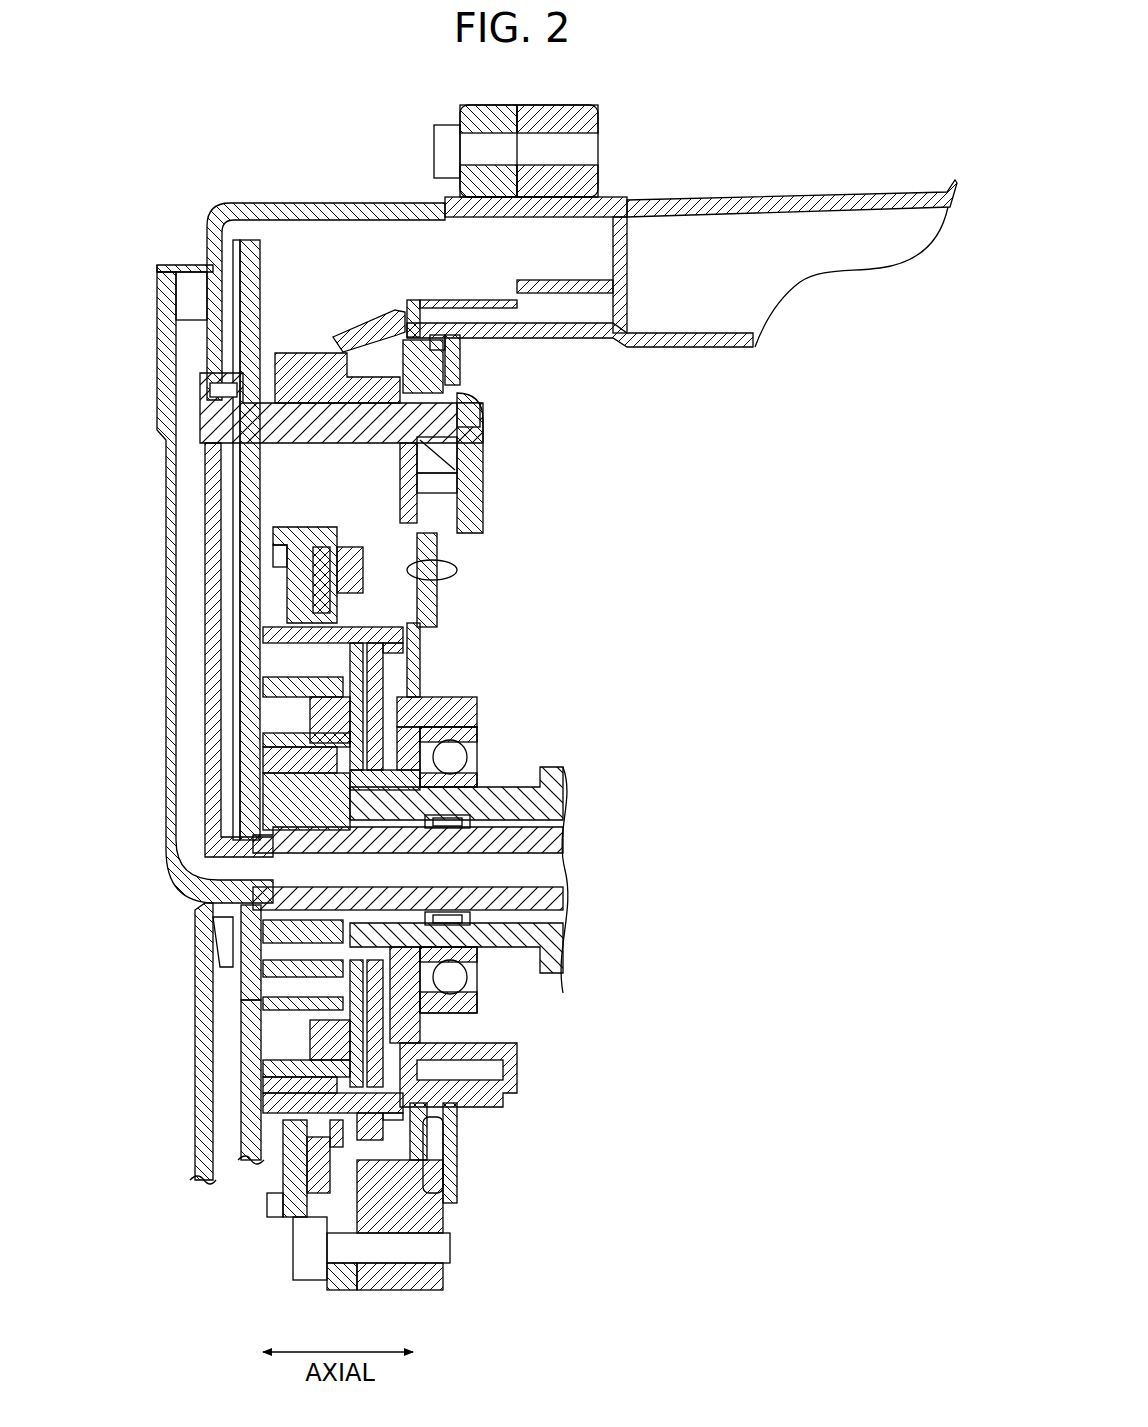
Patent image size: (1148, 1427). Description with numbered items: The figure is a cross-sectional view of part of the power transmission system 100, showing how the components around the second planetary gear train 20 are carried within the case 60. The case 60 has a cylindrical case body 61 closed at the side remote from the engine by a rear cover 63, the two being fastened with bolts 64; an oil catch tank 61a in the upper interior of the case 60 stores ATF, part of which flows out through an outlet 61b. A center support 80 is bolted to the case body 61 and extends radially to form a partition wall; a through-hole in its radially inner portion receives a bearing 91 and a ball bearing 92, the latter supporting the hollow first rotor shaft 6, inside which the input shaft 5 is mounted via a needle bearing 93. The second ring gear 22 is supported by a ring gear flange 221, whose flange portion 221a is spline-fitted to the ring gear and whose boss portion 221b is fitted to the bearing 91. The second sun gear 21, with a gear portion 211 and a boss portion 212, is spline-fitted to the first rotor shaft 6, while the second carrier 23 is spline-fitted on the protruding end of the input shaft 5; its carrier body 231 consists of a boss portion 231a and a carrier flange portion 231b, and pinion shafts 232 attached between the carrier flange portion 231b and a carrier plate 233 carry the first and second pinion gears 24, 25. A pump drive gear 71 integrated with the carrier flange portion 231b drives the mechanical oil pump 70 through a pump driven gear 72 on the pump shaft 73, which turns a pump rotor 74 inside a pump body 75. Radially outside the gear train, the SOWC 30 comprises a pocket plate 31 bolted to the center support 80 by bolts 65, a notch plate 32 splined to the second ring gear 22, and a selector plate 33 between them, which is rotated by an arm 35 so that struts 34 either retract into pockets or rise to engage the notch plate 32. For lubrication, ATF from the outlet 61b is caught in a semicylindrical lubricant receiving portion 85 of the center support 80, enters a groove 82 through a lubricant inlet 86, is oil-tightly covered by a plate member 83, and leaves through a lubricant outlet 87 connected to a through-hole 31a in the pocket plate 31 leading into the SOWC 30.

The power transmission system 100 is at (128, 330).
The case 60 is at (785, 106).
The case body 61 is at (557, 103).
The oil catch tank 61a is at (712, 236).
The outlet 61b is at (553, 282).
The rear cover 63 is at (482, 108).
The bolts 64 is at (443, 140).
The bolts 65 is at (440, 1247).
The mechanical oil pump 70 is at (368, 306).
The pump drive gear 71 is at (238, 610).
The pump driven gear 72 is at (267, 268).
The pump shaft 73 is at (315, 337).
The pump rotor 74 is at (435, 470).
The pump body 75 is at (495, 420).
The center support 80 is at (400, 308).
The groove 82 is at (465, 352).
The plate member 83 is at (465, 372).
The lubricant receiving portion 85 is at (467, 294).
The lubricant inlet 86 is at (438, 316).
The lubricant outlet 87 is at (417, 1153).
The bearing 91 is at (433, 757).
The ball bearing 92 is at (477, 730).
The needle bearing 93 is at (427, 820).
The SOWC 30 is at (273, 565).
The pocket plate 31 is at (300, 590).
The through-hole 31a is at (343, 1150).
The notch plate 32 is at (402, 600).
The selector plate 33 is at (340, 530).
The struts 34 is at (340, 560).
The arm 35 is at (318, 1200).
The second planetary gear train 20 is at (380, 618).
The second sun gear 21 is at (253, 803).
The second ring gear 22 is at (263, 647).
The second carrier 23 is at (194, 751).
The carrier body 231 is at (240, 773).
The boss portion 231a is at (257, 910).
The carrier flange portion 231b is at (245, 970).
The pinion shafts 232 is at (253, 720).
The carrier plate 233 is at (263, 750).
The first pinion gear 24 is at (267, 683).
The second pinion gear 25 is at (197, 1010).
The gear portion 211 is at (220, 933).
The boss portion 212 is at (513, 937).
The ring gear flange 221 is at (385, 673).
The flange portion 221a is at (493, 1053).
The boss portion 221b is at (443, 947).
The input shaft 5 is at (550, 840).
The first rotor shaft 6 is at (563, 797).